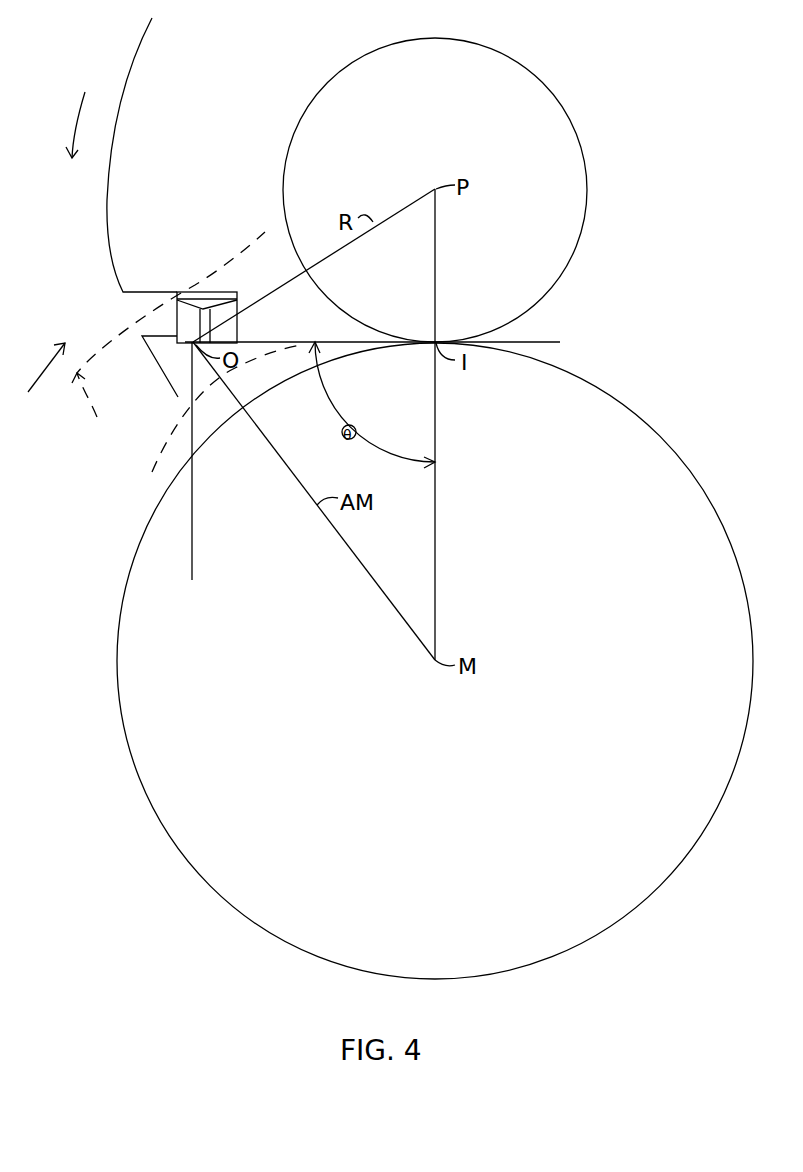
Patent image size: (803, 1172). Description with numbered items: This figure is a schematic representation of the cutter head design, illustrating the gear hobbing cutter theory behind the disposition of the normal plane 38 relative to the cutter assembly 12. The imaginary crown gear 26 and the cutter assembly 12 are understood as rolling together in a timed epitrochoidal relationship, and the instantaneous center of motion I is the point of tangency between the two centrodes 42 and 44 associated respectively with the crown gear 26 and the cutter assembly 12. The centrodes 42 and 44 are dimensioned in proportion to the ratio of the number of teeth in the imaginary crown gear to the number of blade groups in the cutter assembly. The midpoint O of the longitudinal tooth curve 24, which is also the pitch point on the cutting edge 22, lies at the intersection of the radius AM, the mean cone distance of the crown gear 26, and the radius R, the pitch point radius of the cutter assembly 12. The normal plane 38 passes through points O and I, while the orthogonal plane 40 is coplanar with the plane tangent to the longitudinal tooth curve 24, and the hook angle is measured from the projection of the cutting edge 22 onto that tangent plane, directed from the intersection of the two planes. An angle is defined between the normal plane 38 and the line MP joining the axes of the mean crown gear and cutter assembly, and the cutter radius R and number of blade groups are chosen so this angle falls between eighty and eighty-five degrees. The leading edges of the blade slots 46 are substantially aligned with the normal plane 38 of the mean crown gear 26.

The cutter assembly 12 is at (197, 94).
The cutting edge 22 is at (193, 344).
The longitudinal tooth curve 24 is at (203, 274).
The imaginary crown gear 26 is at (180, 352).
The normal plane 38 is at (580, 308).
The orthogonal plane 40 is at (244, 548).
The centrode of crown gear 42 is at (650, 425).
The centrode of cutter assembly 44 is at (583, 156).
The blade slots 46 is at (145, 337).